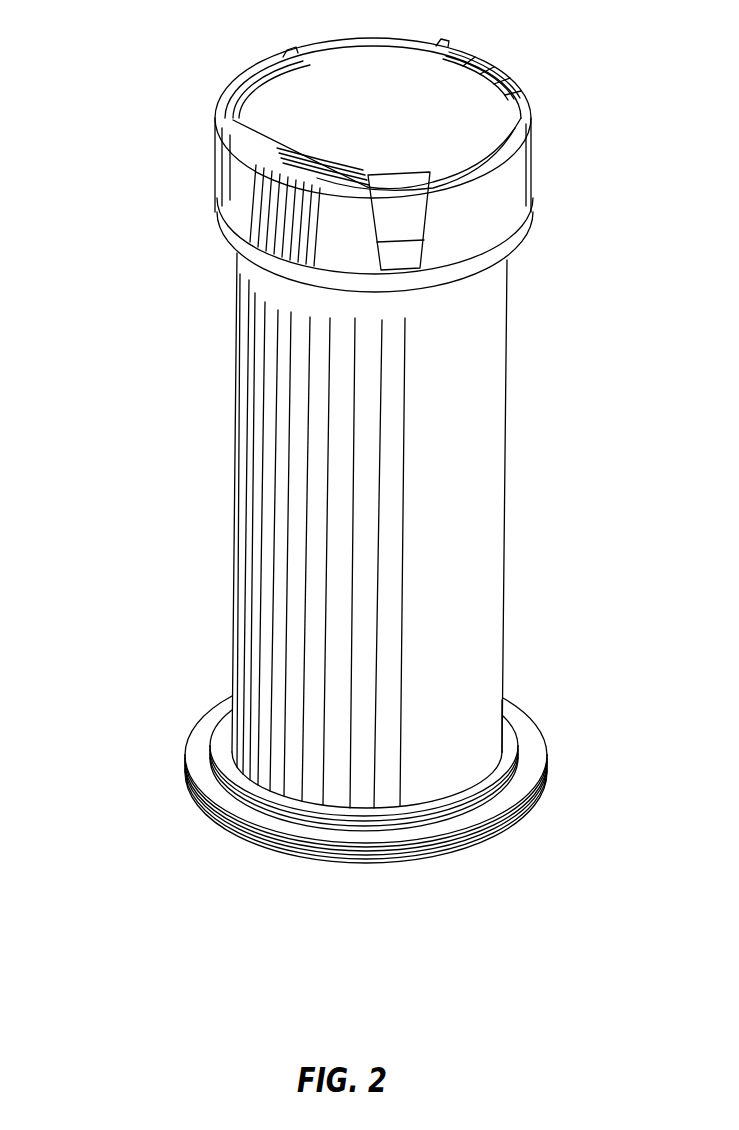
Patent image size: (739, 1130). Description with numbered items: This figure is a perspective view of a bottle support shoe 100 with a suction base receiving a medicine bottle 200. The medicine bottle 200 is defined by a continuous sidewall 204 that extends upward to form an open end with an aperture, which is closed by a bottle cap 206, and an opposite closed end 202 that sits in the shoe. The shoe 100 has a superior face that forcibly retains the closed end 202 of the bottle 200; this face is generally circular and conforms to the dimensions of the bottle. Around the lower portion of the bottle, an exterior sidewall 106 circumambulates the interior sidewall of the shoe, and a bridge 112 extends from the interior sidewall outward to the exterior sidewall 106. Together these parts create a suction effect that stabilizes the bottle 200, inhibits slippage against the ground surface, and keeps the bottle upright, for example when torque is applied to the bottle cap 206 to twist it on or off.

The bottle support shoe 100 is at (158, 707).
The medicine bottle 200 is at (132, 342).
The bottle cap 206 is at (530, 160).
The continuous sidewall 204 is at (466, 560).
The closed end 202 is at (490, 743).
The bridge 112 is at (513, 745).
The exterior sidewall 106 is at (532, 780).